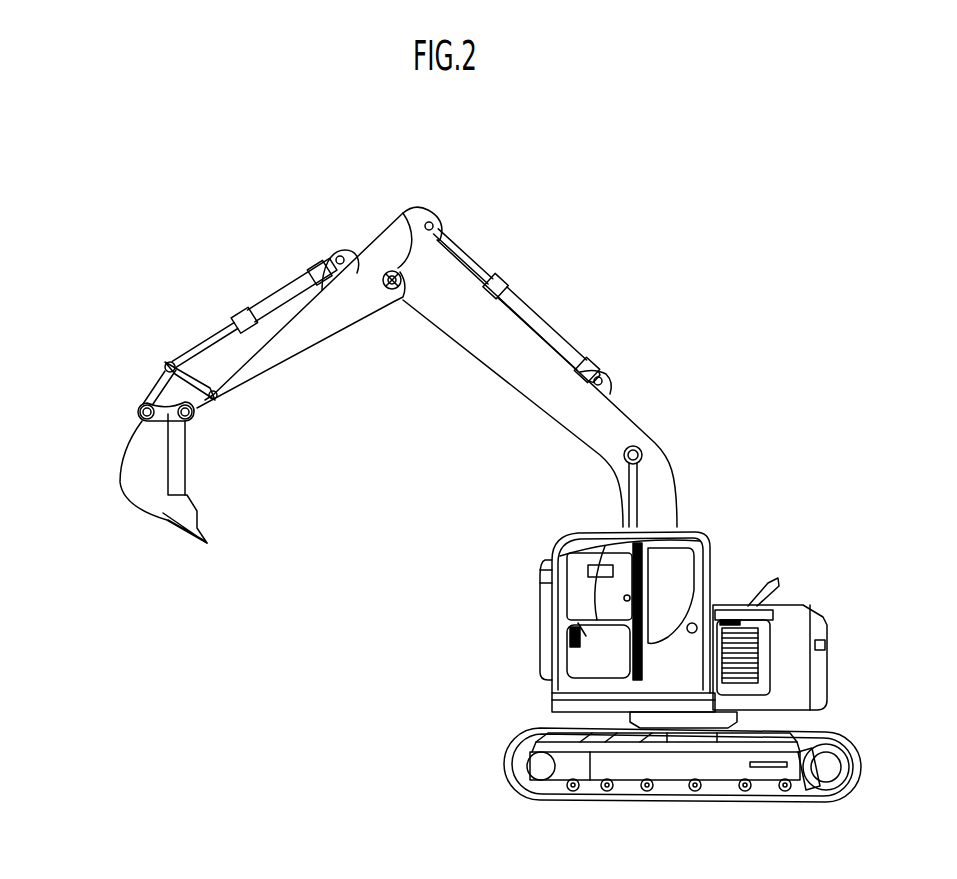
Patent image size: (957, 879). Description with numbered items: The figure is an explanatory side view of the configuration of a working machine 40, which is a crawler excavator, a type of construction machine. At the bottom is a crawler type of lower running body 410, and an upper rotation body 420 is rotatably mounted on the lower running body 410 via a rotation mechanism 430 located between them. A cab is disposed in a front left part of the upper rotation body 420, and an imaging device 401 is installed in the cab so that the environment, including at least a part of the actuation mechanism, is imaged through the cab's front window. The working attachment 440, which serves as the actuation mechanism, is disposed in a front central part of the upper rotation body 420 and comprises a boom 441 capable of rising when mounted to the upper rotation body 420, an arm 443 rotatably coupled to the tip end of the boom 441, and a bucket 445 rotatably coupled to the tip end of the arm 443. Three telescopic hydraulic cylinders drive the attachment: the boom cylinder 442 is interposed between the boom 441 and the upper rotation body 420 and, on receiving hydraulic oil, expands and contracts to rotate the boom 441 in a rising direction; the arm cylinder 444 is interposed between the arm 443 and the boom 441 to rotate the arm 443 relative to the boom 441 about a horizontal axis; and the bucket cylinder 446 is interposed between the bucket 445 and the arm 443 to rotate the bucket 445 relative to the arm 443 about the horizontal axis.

The working machine 40 is at (797, 362).
The imaging device 401 is at (685, 537).
The lower running body 410 is at (858, 752).
The upper rotation body 420 is at (838, 648).
The rotation mechanism 430 is at (742, 718).
The working attachment 440 is at (467, 216).
The boom 441 is at (667, 488).
The boom cylinder 442 is at (622, 513).
The arm 443 is at (302, 340).
The arm cylinder 444 is at (530, 318).
The bucket 445 is at (122, 465).
The bucket cylinder 446 is at (265, 302).